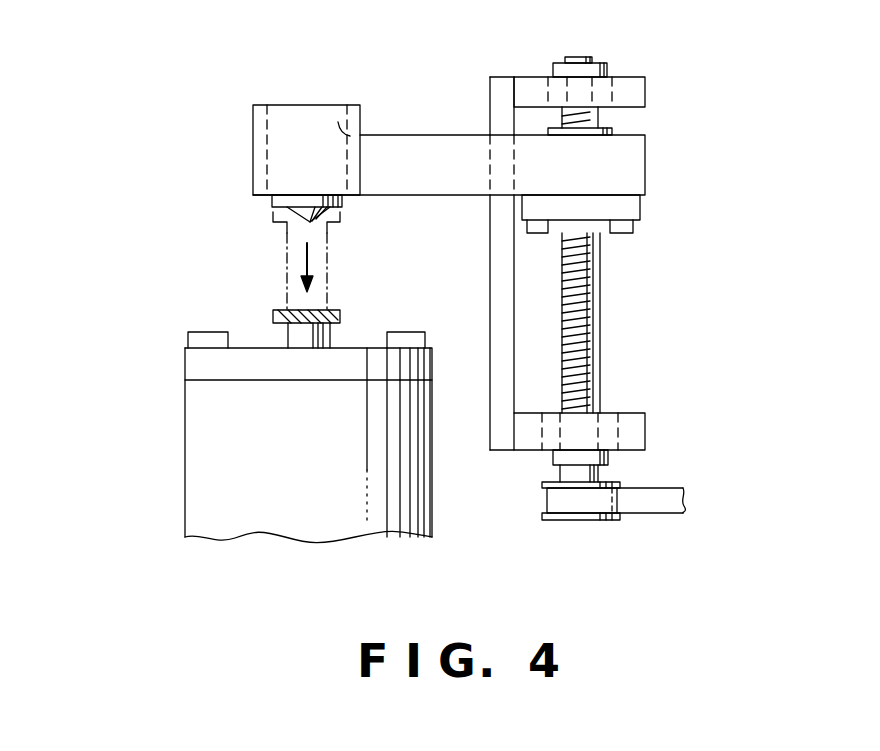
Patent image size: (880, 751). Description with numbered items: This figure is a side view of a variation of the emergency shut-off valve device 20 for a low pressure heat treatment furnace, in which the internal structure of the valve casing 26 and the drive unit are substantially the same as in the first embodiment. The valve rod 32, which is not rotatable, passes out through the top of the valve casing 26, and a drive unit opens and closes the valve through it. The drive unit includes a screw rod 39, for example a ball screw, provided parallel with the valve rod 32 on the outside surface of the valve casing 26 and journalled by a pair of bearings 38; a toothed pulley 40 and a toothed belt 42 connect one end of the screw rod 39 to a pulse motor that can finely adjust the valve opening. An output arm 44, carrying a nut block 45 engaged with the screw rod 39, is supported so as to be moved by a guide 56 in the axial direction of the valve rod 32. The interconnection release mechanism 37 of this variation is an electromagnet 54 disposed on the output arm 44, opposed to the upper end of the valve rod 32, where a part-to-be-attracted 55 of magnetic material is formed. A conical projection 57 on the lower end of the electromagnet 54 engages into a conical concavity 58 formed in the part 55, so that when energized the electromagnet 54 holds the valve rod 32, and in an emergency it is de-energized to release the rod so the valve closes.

The workpiece support assembly 20 is at (158, 325).
The valve casing 26 is at (195, 472).
The valve rod 32 is at (285, 340).
The interconnection release mechanism 37 is at (231, 175).
The bearings 38 is at (613, 93).
The screw rod 39 is at (600, 295).
The toothed pulley 40 is at (578, 520).
The toothed belt 42 is at (658, 507).
The output arm 44 is at (417, 143).
The traveling nut block 45 is at (640, 210).
The electromagnet 54 is at (272, 202).
The part-to-be-attracted 55 is at (343, 316).
The guide 56 is at (503, 253).
The conical projection 57 is at (318, 214).
The conical concavity 58 is at (298, 310).